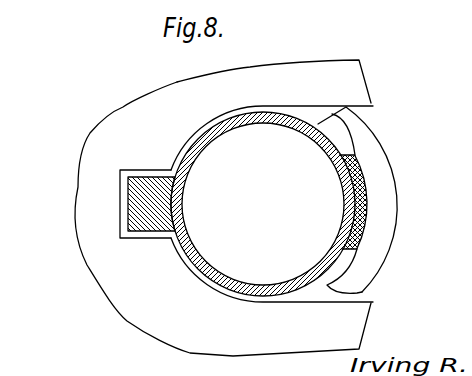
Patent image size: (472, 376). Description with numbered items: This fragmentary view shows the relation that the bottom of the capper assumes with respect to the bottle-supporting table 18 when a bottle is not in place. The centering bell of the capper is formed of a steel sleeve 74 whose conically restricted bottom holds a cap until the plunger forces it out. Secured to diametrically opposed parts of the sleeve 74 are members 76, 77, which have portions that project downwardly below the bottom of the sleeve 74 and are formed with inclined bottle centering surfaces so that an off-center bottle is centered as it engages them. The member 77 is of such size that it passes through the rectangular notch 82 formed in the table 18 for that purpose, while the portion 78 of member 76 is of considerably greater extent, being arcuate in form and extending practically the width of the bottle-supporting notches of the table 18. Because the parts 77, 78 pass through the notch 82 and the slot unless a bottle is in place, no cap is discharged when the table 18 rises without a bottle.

The table 18 is at (303, 72).
The steel sleeve 74 is at (207, 143).
The member 76 is at (369, 201).
The member 77 is at (127, 201).
The portion 78 is at (381, 231).
The rectangular notch 82 is at (152, 236).